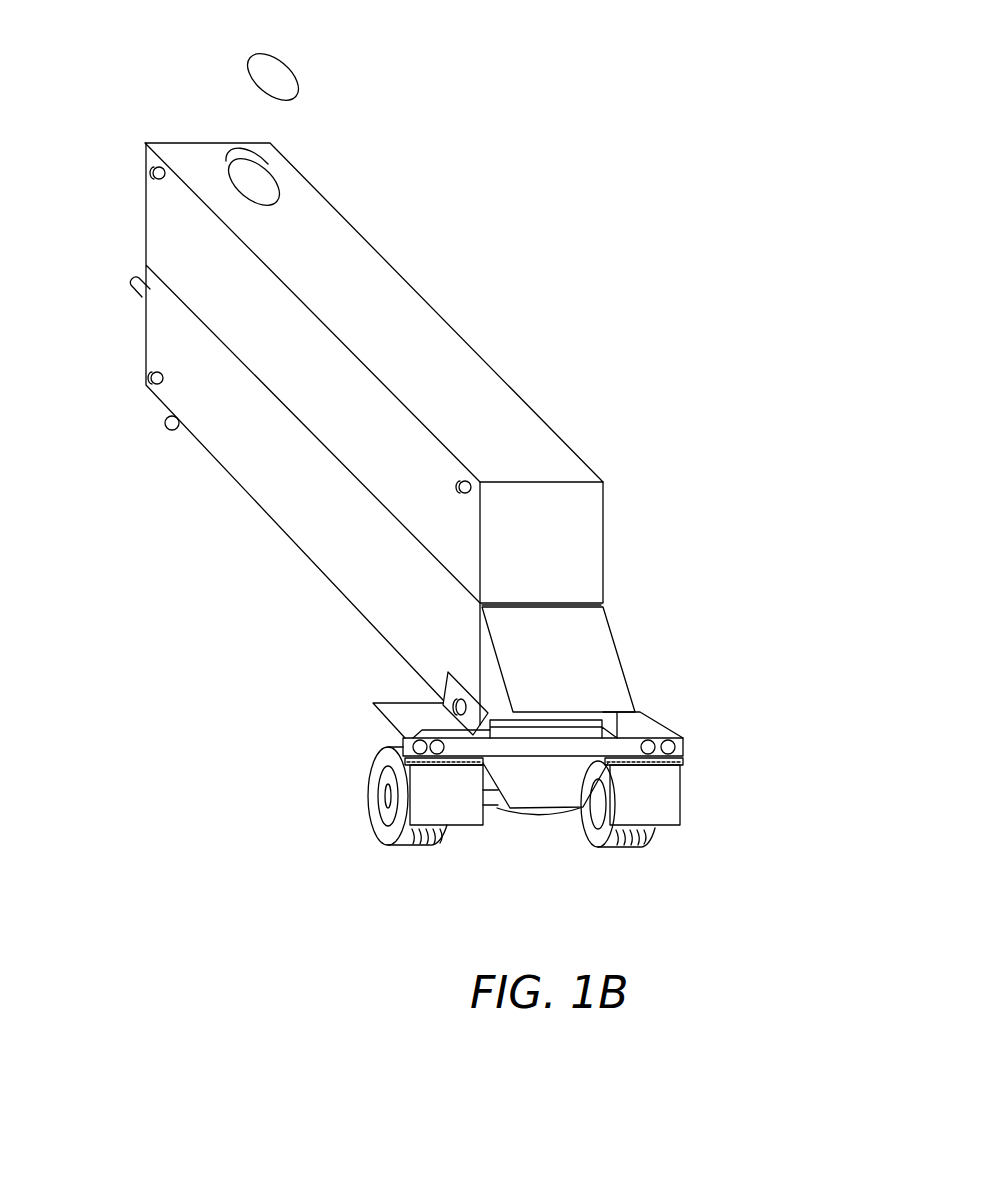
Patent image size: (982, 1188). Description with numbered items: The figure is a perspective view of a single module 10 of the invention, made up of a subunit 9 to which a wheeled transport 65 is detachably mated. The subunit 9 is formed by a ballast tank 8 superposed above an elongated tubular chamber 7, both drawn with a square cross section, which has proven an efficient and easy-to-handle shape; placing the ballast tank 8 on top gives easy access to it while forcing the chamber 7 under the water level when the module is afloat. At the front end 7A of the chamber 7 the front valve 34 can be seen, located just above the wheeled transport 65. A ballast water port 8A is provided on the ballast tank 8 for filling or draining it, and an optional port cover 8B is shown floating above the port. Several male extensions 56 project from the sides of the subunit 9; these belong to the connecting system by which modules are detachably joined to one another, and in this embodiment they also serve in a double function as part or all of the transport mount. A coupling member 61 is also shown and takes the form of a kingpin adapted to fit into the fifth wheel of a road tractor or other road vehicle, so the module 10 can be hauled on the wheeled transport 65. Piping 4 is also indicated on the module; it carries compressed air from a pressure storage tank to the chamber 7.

The chamber 7 is at (243, 485).
The front end 7A is at (493, 683).
The ballast tank 8 is at (572, 463).
The ballast water port 8A is at (273, 173).
The port cover 8B is at (293, 70).
The subunit 9 is at (758, 485).
The module 10 is at (464, 292).
The front valve 34 is at (608, 692).
The piping 4 is at (127, 282).
The male extension 56 is at (148, 170).
The coupling member 61 is at (172, 432).
The wheeled transport 65 is at (352, 748).